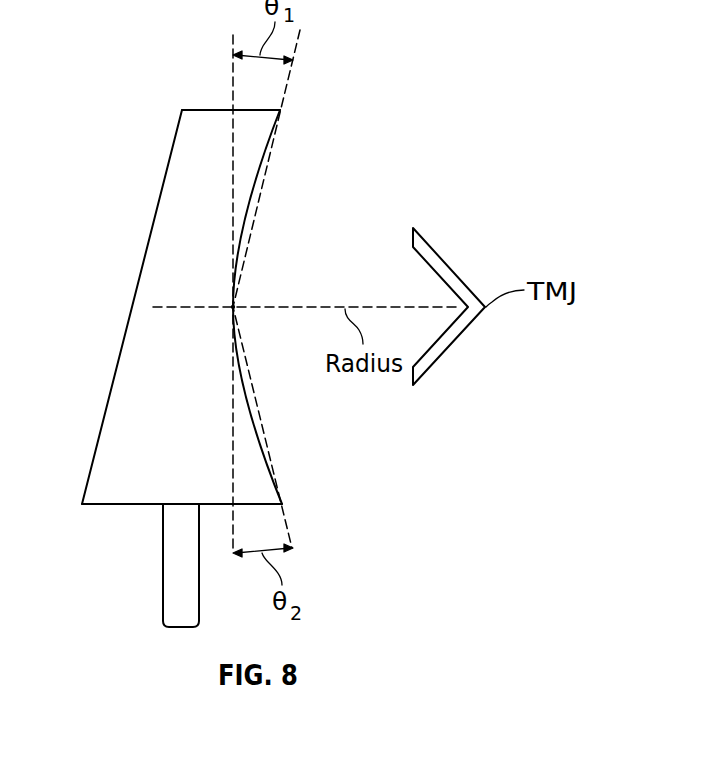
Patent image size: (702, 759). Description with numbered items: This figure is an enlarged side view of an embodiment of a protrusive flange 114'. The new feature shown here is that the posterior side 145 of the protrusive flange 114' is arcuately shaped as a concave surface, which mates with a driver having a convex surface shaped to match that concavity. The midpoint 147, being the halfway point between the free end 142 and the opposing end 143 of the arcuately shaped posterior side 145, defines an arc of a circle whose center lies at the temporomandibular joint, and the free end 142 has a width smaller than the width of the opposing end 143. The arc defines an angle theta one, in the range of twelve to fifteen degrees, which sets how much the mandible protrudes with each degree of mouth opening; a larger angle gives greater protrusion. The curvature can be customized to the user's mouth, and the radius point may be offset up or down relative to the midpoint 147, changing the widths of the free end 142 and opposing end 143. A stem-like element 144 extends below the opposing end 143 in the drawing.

The protrusive flange 114' is at (119, 307).
The free end 142 is at (195, 110).
The opposing end 143 is at (104, 505).
The stem 144 is at (163, 595).
The posterior side 145 is at (270, 416).
The midpoint 147 is at (234, 306).